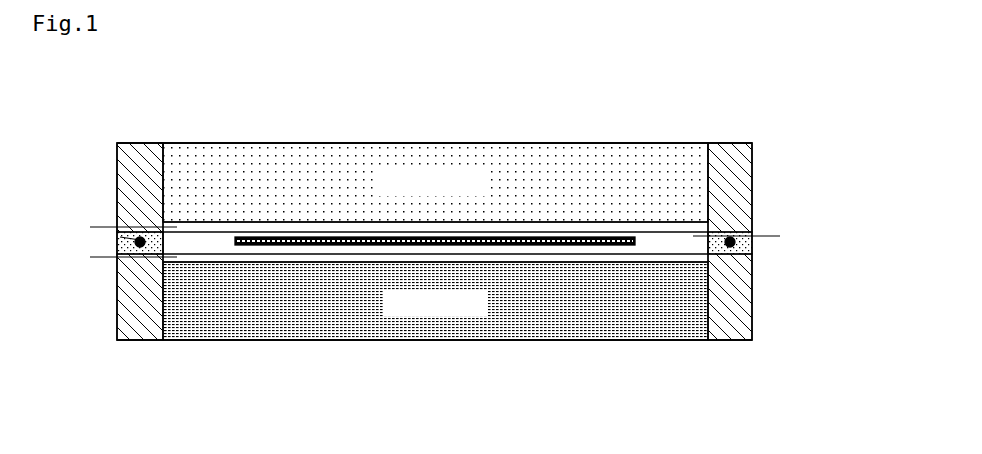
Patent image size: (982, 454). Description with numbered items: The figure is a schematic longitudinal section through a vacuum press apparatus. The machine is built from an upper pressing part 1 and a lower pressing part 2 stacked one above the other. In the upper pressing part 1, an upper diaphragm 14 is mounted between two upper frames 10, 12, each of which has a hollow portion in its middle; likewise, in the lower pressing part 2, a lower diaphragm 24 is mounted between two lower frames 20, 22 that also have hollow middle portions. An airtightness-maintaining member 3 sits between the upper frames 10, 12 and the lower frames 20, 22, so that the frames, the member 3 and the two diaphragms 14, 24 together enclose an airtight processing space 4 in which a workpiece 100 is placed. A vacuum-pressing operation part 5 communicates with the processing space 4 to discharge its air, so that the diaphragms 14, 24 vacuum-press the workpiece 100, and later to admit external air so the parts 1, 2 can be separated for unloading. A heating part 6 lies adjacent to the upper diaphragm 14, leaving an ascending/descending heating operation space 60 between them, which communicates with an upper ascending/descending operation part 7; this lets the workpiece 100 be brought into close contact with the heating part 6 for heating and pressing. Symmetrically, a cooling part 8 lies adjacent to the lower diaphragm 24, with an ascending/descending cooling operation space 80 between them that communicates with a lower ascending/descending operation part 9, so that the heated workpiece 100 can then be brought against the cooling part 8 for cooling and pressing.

The upper pressing part 1 is at (835, 93).
The lower pressing part 2 is at (835, 298).
The airtightness-maintaining member 3 is at (119, 237).
The processing space 4 is at (210, 240).
The vacuum-pressing operation part 5 is at (779, 236).
The heating part 6 is at (510, 157).
The upper ascending/descending operation part 7 is at (108, 226).
The cooling part 8 is at (510, 325).
The lower ascending/descending operation part 9 is at (108, 258).
The upper frame 10 is at (737, 177).
The upper frame 12 is at (749, 233).
The upper diaphragm 14 is at (671, 232).
The lower frame 20 is at (737, 307).
The lower frame 22 is at (752, 247).
The lower diaphragm 24 is at (670, 262).
The ascending/descending heating operation space 60 is at (308, 225).
The ascending/descending cooling operation space 80 is at (308, 258).
The workpiece 100 is at (572, 237).